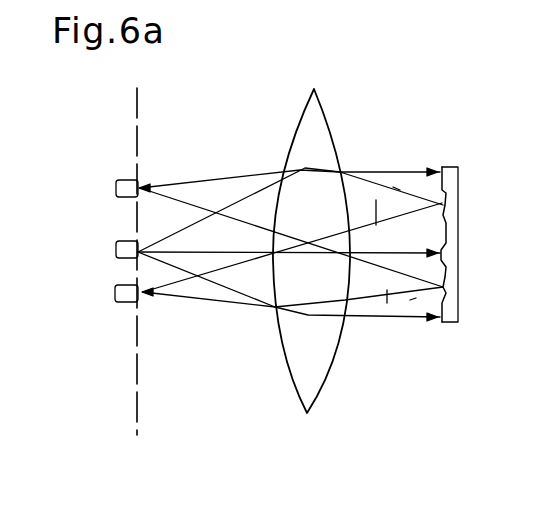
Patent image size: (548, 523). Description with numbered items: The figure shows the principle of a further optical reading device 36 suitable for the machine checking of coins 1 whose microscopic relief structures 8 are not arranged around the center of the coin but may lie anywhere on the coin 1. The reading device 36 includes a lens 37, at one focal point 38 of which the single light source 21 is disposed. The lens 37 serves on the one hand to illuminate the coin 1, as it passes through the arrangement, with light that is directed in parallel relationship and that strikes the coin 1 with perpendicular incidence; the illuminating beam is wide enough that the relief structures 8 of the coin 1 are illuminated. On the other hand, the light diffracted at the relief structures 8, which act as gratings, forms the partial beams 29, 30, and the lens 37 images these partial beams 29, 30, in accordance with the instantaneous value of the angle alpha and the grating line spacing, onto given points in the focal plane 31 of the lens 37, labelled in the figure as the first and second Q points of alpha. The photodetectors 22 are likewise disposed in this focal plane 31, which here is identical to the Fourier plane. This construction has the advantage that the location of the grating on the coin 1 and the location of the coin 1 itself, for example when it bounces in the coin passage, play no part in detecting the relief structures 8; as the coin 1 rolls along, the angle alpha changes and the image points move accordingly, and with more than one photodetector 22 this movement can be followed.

The coin 1 is at (472, 244).
The microscopic relief structures 8 is at (458, 270).
The light source 21 is at (116, 250).
The photodetectors 22 is at (116, 188).
The partial beam 29 is at (393, 187).
The partial beam 30 is at (376, 225).
The focal plane 31 is at (133, 415).
The reading device 36 is at (235, 412).
The lens 37 is at (313, 380).
The focal point 38 is at (116, 241).